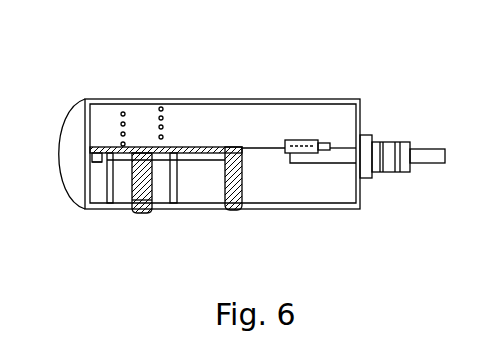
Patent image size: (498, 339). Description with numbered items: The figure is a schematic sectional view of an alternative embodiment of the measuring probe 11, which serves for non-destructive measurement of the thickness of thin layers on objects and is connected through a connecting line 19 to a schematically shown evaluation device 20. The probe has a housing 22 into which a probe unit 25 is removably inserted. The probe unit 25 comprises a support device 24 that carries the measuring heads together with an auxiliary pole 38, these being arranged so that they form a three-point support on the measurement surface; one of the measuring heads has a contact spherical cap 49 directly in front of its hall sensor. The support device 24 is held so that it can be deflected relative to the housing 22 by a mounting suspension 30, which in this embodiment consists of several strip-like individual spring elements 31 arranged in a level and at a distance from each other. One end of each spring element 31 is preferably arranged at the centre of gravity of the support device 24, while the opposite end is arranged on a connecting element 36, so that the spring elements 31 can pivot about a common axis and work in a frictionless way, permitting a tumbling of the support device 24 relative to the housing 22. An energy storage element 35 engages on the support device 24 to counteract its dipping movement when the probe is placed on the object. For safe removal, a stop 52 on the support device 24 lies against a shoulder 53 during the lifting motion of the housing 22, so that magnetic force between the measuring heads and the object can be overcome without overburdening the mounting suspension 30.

The measuring probe 11 is at (198, 82).
The connecting line 19 is at (425, 156).
The evaluation device 20 is at (139, 215).
The housing 22 is at (141, 99).
The support device 24 is at (108, 150).
The probe unit 25 is at (183, 122).
The mounting suspension 30 is at (210, 123).
The spring element 31 is at (234, 147).
The energy storage element 35 is at (104, 148).
The connecting element 36 is at (300, 155).
The auxiliary pole 38 is at (233, 212).
The contact spherical cap 49 is at (150, 214).
The stop 52 is at (93, 153).
The shoulder 53 is at (91, 159).